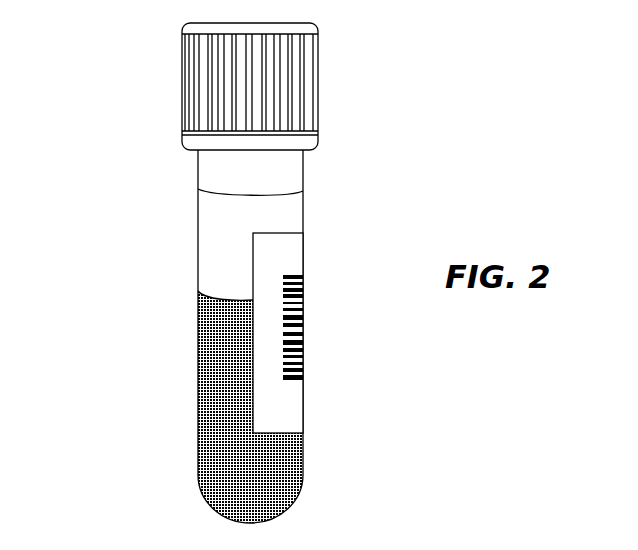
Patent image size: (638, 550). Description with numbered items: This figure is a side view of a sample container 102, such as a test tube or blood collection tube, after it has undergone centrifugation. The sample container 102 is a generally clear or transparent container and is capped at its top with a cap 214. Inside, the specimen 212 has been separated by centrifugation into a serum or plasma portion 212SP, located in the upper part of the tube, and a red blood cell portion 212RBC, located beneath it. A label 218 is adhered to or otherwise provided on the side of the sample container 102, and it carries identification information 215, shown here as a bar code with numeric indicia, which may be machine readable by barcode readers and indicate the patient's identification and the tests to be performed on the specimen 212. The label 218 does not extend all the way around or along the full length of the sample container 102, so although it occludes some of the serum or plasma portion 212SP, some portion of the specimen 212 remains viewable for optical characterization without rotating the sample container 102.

The sample container 102 is at (143, 96).
The cap 214 is at (318, 75).
The specimen 212 is at (127, 205).
The serum or plasma portion 212SP is at (185, 190).
The red blood cell portion 212RBC is at (185, 290).
The label 218 is at (280, 232).
The identification information 215 is at (318, 318).